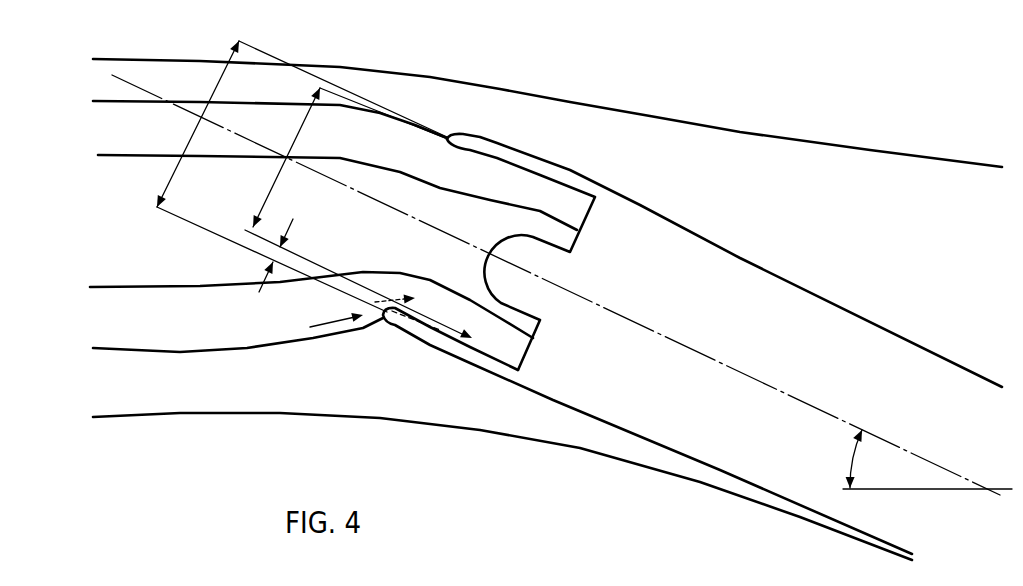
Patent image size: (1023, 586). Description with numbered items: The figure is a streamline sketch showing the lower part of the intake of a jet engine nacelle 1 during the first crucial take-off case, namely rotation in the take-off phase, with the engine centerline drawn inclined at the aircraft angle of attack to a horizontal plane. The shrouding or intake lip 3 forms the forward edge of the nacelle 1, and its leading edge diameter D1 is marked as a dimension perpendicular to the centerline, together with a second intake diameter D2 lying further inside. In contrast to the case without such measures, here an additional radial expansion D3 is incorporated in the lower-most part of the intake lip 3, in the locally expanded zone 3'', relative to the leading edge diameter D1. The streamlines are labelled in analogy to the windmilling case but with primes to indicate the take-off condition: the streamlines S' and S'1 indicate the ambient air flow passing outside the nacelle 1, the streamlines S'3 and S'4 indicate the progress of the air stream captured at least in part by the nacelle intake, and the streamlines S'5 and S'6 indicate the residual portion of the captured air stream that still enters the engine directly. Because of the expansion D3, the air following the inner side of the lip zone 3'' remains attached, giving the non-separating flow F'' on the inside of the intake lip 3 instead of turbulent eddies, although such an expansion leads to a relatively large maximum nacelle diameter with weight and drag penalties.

The nacelle 1 is at (745, 258).
The intake lip 3 is at (521, 245).
The intake lip zone 3'' is at (643, 424).
The streamline S' is at (547, 112).
The streamline S'1 is at (502, 486).
The streamline S'3 is at (245, 120).
The streamline S'4 is at (238, 328).
The streamline S'5 is at (310, 187).
The streamline S'6 is at (311, 284).
The leading edge diameter D1 is at (193, 137).
The intake diameter D2 is at (298, 140).
The additional radial expansion D3 is at (276, 256).
The non-separating flow F'' is at (358, 284).